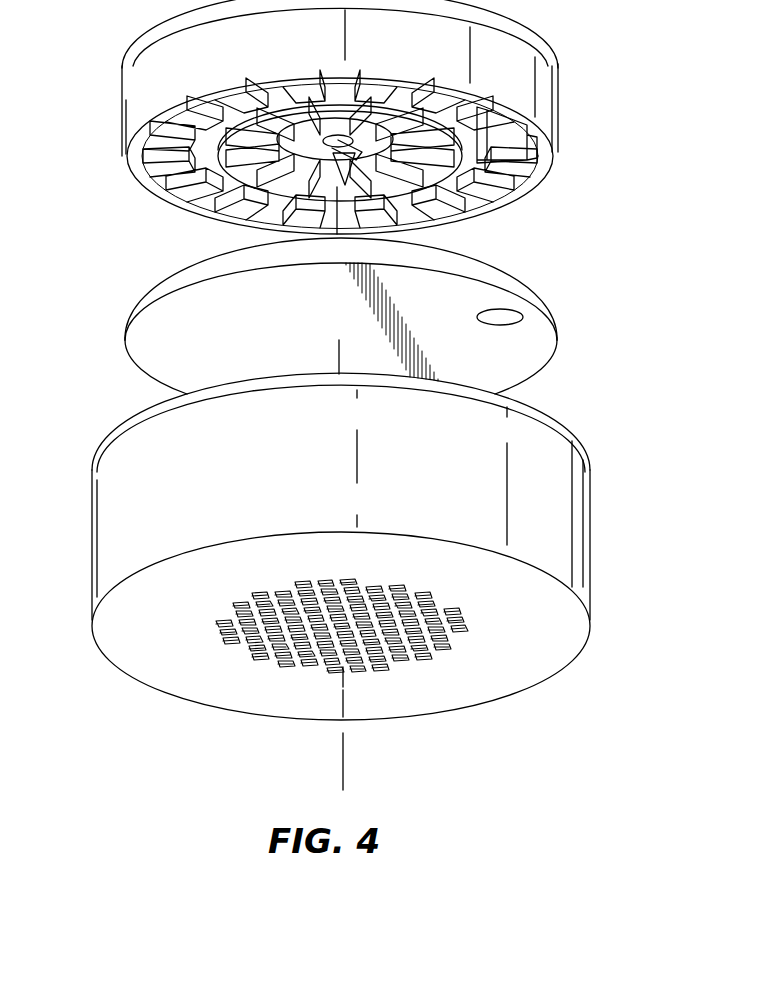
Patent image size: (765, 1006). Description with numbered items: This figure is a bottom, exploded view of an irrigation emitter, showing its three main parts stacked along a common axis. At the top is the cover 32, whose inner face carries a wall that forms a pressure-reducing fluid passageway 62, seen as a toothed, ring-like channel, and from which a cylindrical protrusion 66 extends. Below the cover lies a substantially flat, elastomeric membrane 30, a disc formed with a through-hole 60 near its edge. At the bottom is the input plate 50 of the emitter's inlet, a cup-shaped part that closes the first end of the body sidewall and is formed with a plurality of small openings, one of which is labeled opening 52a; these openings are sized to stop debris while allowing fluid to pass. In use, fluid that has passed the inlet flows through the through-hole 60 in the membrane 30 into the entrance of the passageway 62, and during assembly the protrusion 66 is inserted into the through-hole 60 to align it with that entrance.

The membrane 30 is at (135, 292).
The cover 32 is at (137, 100).
The input plate 50 is at (517, 663).
The opening 52a is at (400, 662).
The through-hole 60 is at (507, 318).
The pressure-reducing fluid passageway 62 is at (477, 193).
The cylindrical protrusion 66 is at (502, 140).